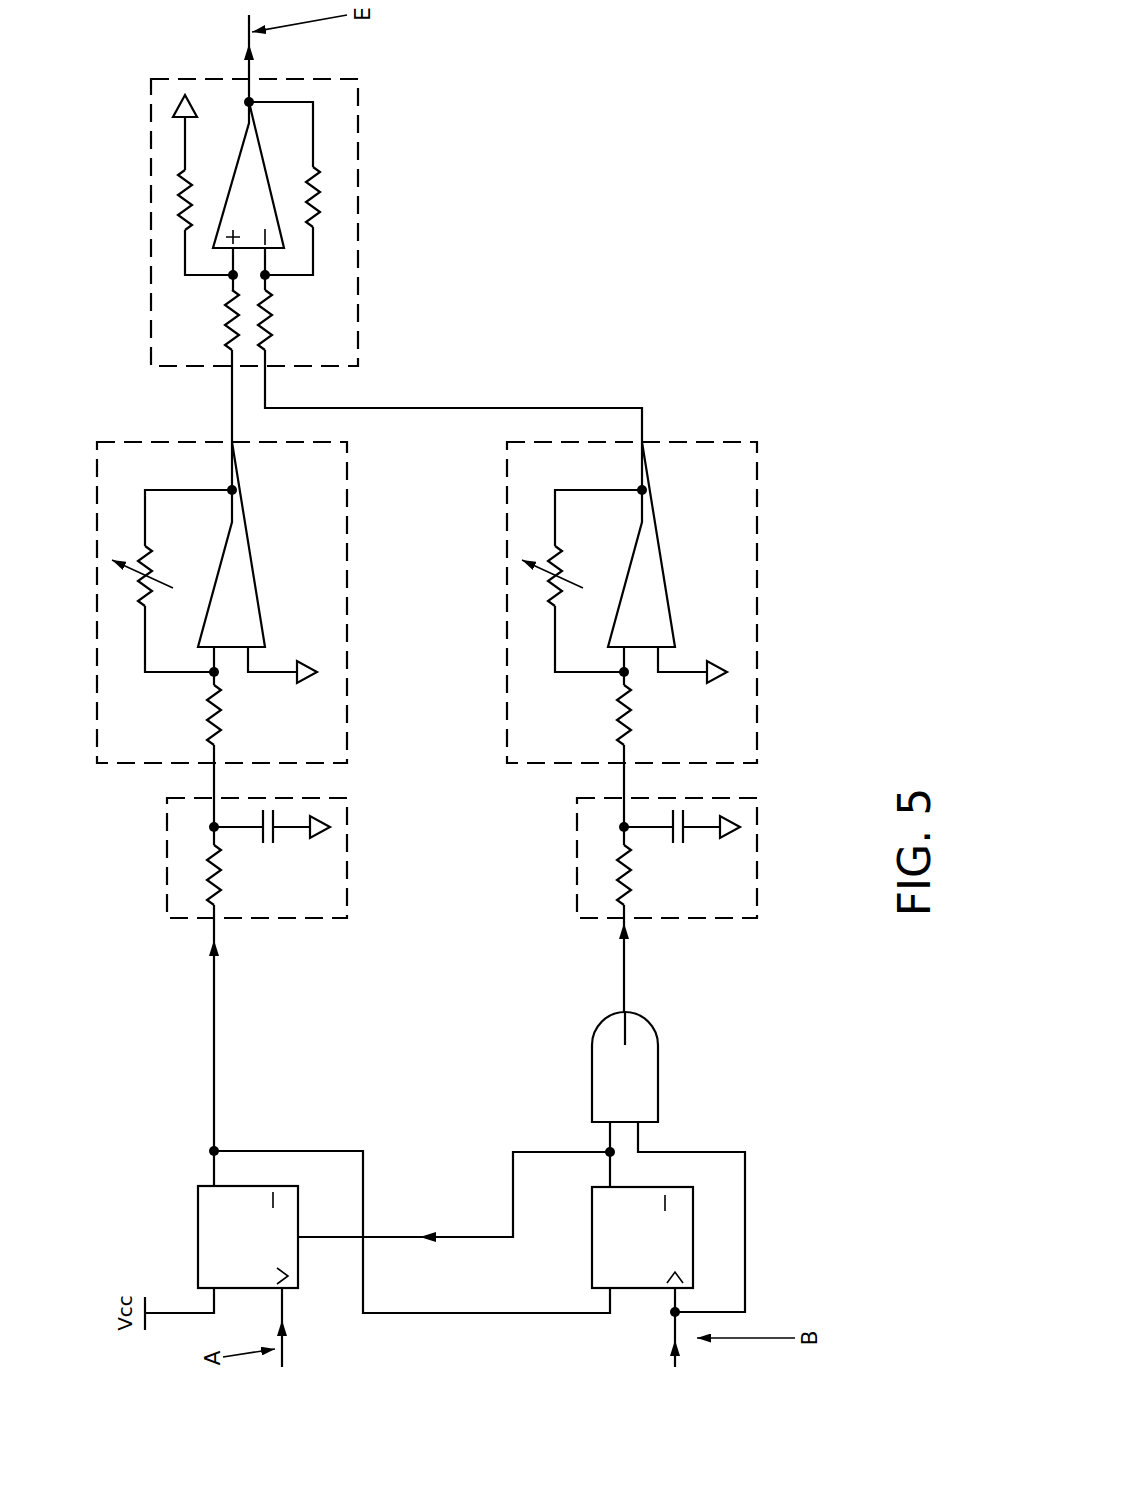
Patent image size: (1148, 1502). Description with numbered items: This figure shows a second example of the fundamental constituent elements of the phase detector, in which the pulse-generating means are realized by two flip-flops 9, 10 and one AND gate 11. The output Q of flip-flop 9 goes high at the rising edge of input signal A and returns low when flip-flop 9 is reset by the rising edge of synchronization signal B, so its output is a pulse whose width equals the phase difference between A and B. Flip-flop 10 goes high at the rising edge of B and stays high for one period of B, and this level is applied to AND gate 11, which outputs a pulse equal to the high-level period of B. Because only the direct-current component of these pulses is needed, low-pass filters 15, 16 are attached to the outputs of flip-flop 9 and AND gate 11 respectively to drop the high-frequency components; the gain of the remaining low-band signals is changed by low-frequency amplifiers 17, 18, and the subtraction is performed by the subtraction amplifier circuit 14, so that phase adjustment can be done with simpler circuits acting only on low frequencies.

The flip-flop 9 is at (198, 1227).
The flip-flop 10 is at (693, 1232).
The AND gate 11 is at (658, 1068).
The subtraction amplifier circuit 14 is at (357, 255).
The low-pass filter 15 is at (167, 918).
The low-pass filter 16 is at (757, 832).
The low-frequency amplifier 17 is at (136, 438).
The low-frequency amplifier 18 is at (757, 580).